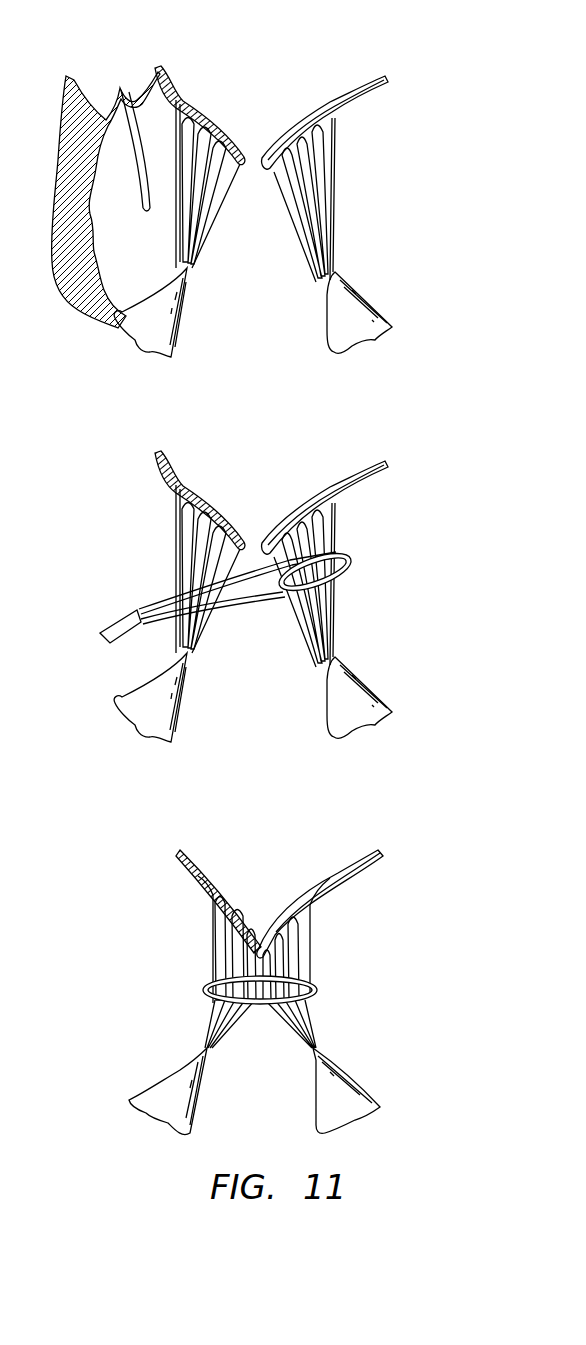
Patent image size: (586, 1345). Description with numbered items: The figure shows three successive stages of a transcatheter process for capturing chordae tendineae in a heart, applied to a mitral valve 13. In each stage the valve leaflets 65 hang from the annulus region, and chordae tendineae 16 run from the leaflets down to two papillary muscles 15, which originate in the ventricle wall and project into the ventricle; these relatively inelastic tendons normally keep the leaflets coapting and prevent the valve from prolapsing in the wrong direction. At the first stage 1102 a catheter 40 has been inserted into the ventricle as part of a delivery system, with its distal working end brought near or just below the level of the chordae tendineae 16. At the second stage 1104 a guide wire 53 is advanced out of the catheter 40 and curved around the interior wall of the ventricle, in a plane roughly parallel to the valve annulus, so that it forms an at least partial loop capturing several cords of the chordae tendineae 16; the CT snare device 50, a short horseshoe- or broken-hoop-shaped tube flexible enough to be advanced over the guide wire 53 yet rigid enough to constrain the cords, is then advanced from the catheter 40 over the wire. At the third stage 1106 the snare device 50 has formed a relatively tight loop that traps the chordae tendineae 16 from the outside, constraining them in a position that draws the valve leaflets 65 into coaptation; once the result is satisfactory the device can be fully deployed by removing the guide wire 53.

The valve 13 is at (282, 577).
The valve leaflets 65 is at (282, 130).
The chordae tendineae 16 is at (215, 216).
The papillary muscles 15 is at (366, 310).
The catheter 40 is at (138, 186).
The guide wire 53 is at (158, 598).
The CT snare device 50 is at (350, 565).
The stage 1102 is at (380, 241).
The stage 1104 is at (390, 620).
The stage 1106 is at (390, 1012).